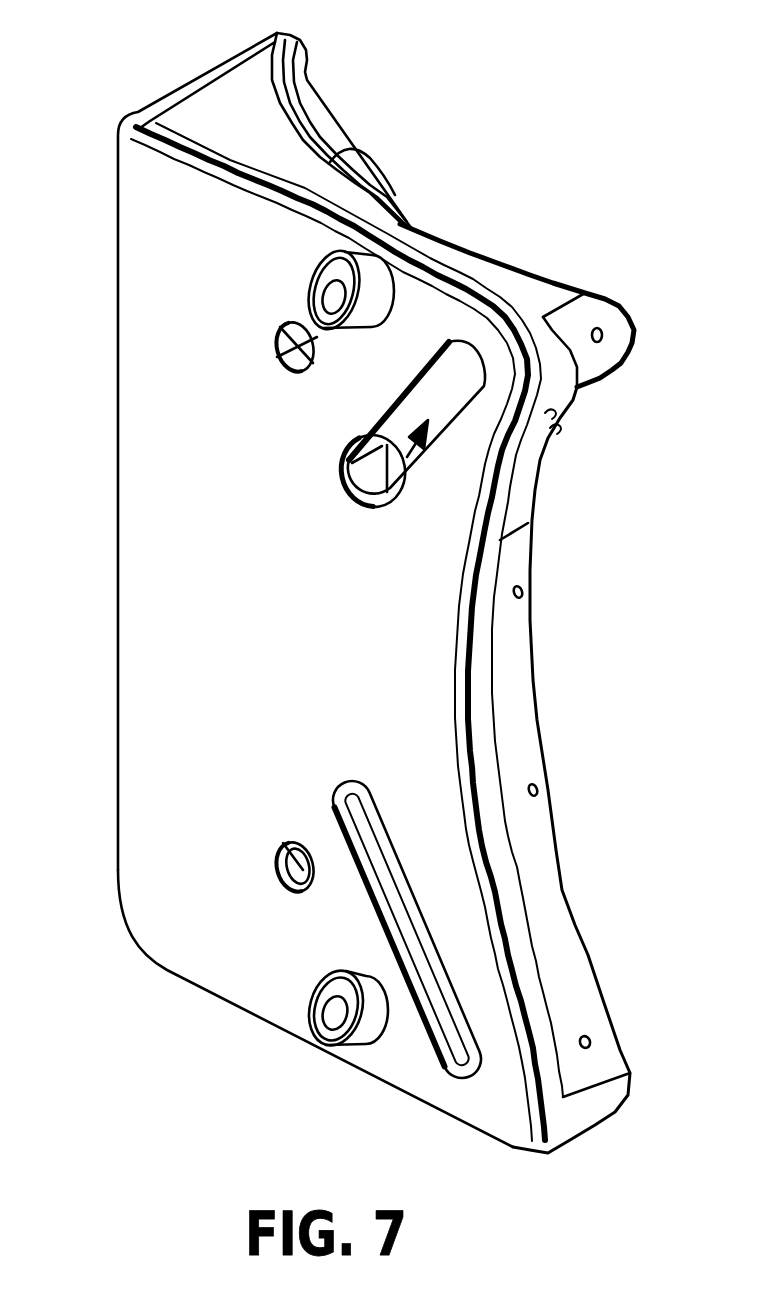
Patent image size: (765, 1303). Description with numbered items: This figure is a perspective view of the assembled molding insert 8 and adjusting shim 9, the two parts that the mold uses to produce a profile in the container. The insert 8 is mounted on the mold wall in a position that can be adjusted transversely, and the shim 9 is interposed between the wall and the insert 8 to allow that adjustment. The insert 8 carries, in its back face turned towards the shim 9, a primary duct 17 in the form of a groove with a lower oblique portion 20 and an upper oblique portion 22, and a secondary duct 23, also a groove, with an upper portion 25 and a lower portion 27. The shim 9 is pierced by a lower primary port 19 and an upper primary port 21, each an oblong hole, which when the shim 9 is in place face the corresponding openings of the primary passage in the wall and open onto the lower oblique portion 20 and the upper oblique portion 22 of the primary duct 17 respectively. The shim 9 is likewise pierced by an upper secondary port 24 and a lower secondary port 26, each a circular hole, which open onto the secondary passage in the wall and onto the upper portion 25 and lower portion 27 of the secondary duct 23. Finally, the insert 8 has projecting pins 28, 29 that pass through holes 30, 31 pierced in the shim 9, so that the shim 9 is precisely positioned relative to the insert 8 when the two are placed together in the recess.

The molding insert 8 is at (537, 697).
The adjusting shim 9 is at (130, 567).
The primary duct 17 is at (328, 748).
The lower primary port 19 is at (363, 782).
The lower oblique portion of the primary duct 20 is at (405, 920).
The upper primary port 21 is at (343, 492).
The upper oblique portion of the primary duct 22 is at (380, 510).
The secondary duct 23 is at (248, 604).
The upper secondary port 24 is at (273, 347).
The upper portion of the secondary duct 25 is at (248, 377).
The lower secondary port 26 is at (277, 870).
The lower portion of the secondary duct 27 is at (251, 823).
The projecting pin 28 is at (392, 268).
The projecting pin 29 is at (345, 1040).
The hole 30 is at (387, 288).
The hole 31 is at (390, 993).